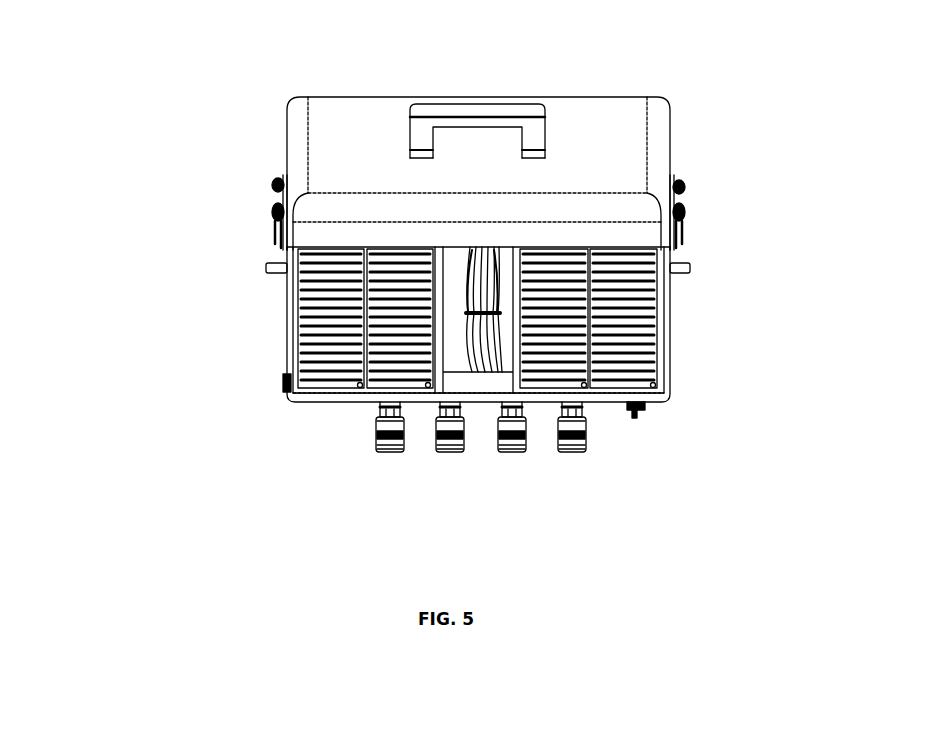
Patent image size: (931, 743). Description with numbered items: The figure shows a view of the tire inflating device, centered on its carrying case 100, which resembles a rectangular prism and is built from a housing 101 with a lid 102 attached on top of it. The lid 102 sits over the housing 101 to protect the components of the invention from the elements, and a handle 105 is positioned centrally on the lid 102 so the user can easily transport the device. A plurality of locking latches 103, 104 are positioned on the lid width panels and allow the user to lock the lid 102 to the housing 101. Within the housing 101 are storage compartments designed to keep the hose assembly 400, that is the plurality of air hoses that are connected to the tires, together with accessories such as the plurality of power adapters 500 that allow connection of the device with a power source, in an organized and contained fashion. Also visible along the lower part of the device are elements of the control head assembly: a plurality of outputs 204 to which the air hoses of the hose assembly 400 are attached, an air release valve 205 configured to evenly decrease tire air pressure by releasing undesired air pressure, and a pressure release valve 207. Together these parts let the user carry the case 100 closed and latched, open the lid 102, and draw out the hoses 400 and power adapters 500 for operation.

The carrying case 100 is at (240, 140).
The housing 101 is at (290, 310).
The lid 102 is at (612, 130).
The locking latch 103 is at (687, 213).
The locking latch 104 is at (690, 272).
The handle 105 is at (522, 113).
The outputs 204 is at (580, 455).
The air release valve 205 is at (640, 413).
The pressure release valve 207 is at (285, 383).
The hose assembly 400 is at (290, 338).
The power adapters 500 is at (476, 372).